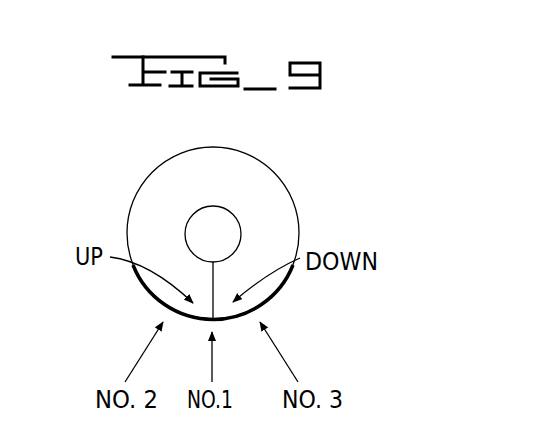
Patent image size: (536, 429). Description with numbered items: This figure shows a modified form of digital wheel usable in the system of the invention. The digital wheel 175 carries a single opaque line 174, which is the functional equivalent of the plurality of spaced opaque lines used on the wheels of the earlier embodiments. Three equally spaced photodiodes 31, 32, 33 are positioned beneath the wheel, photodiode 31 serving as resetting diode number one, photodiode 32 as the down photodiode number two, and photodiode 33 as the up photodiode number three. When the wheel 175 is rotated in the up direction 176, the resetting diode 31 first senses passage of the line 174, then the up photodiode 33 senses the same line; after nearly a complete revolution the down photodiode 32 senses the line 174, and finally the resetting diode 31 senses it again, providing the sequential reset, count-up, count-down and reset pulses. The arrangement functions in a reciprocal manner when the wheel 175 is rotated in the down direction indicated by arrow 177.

The digital wheel 175 is at (259, 172).
The single opaque line 174 is at (208, 283).
The up direction 176 is at (165, 284).
The down direction arrow 177 is at (262, 292).
The photodiode 31 is at (208, 360).
The photodiode 32 is at (138, 352).
The photodiode 33 is at (280, 363).